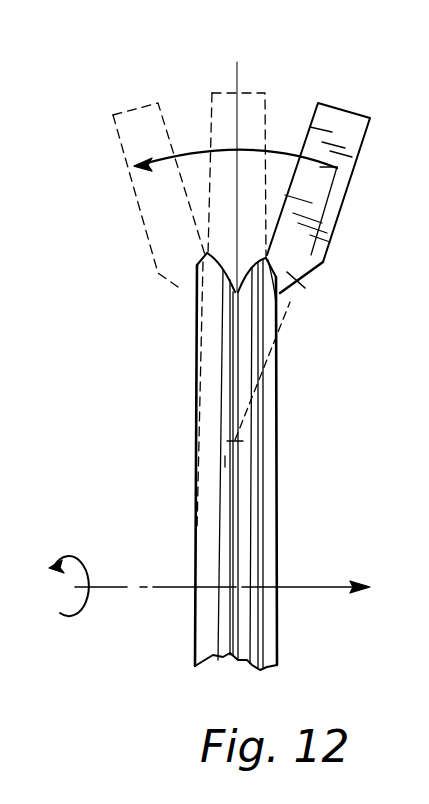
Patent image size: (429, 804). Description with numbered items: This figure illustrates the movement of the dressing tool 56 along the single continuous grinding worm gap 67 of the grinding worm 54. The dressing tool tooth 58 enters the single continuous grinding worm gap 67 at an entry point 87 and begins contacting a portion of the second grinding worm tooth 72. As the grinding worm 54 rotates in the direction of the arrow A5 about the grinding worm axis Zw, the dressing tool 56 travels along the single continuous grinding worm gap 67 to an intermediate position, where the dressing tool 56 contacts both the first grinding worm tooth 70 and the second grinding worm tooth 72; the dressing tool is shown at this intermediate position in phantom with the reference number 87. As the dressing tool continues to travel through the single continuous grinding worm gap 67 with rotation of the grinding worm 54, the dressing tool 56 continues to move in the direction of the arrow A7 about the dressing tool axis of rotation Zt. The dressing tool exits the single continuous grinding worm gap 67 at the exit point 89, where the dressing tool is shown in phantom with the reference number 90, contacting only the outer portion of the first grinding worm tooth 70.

The grinding worm 54 is at (280, 533).
The dressing tool 56 is at (351, 112).
The dressing tool tooth 58 is at (296, 280).
The single continuous grinding worm gap 67 is at (224, 461).
The first grinding worm tooth 70 is at (200, 277).
The second grinding worm tooth 72 is at (250, 292).
The entry point / intermediate dressing tool position 87 is at (214, 93).
The exit point 89 is at (204, 260).
The phantom dressing tool position at exit 90 is at (113, 115).
The direction of rotation of the grinding worm A5 is at (88, 578).
The direction of movement of the dressing tool A7 is at (220, 152).
The dressing tool axis of rotation Zt is at (243, 441).
The grinding worm axis Zw is at (222, 606).